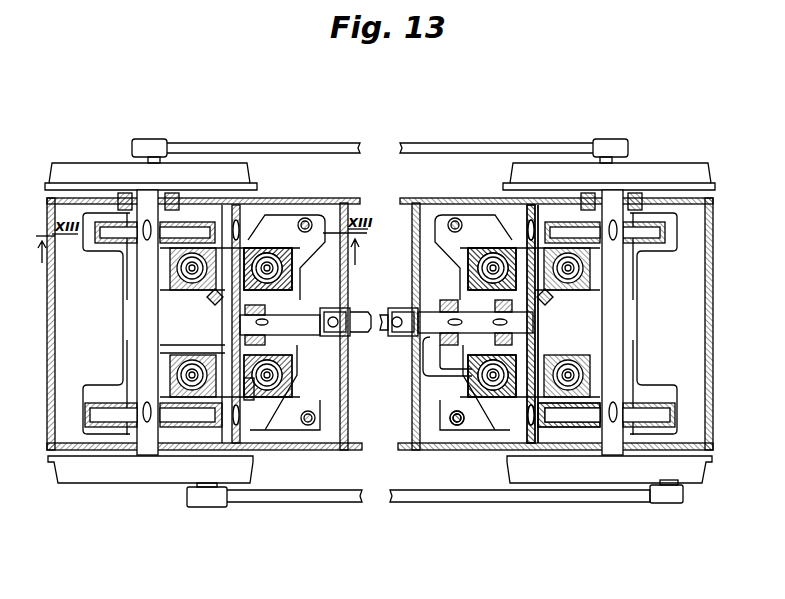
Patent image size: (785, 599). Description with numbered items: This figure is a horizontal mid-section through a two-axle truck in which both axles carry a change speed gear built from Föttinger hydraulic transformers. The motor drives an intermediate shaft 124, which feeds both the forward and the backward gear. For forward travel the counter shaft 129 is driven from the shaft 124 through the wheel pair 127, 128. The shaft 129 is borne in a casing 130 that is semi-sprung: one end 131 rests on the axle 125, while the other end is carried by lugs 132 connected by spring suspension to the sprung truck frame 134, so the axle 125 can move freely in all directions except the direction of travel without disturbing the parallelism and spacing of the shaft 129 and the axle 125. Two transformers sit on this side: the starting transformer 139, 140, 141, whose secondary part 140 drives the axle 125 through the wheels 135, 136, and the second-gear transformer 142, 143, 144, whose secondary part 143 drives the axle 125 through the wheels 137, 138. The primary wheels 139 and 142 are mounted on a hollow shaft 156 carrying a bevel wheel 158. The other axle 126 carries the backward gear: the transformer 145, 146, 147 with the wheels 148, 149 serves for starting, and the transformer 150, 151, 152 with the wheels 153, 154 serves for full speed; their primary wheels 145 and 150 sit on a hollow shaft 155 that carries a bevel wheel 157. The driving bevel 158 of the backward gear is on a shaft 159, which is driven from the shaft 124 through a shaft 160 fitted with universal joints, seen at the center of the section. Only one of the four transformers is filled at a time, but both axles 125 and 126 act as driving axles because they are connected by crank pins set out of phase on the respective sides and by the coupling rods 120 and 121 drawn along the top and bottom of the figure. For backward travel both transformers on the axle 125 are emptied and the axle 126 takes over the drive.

The coupling rod 120 is at (606, 150).
The coupling rod 121 is at (422, 497).
The intermediate shaft 124 is at (425, 335).
The axle 125 is at (612, 440).
The axle 126 is at (147, 450).
The toothed wheel 127 is at (500, 308).
The toothed wheel 128 is at (552, 303).
The counter shaft 129 is at (533, 437).
The casing 130 is at (455, 413).
The casing end 131 is at (598, 428).
The lugs 132 is at (457, 426).
The truck frame 134 is at (351, 448).
The toothed wheel 135 is at (546, 425).
The toothed wheel 136 is at (654, 412).
The toothed wheel 137 is at (546, 222).
The toothed wheel 138 is at (573, 227).
The primary wheel of forward starting transformer 139 is at (510, 380).
The secondary part of forward starting transformer 140 is at (482, 377).
The part of forward starting transformer 141 is at (478, 370).
The primary wheel of forward second-gear transformer 142 is at (472, 251).
The secondary part of forward second-gear transformer 143 is at (488, 262).
The part of forward second-gear transformer 144 is at (481, 272).
The primary wheel of backward starting transformer 145 is at (256, 382).
The part of backward starting transformer 146 is at (285, 385).
The part of backward starting transformer 147 is at (278, 372).
The toothed wheel 148 is at (222, 435).
The toothed wheel 149 is at (105, 420).
The primary wheel of backward full-speed transformer 150 is at (280, 254).
The part of backward full-speed transformer 151 is at (283, 270).
The part of backward full-speed transformer 152 is at (280, 286).
The toothed wheel 153 is at (110, 230).
The toothed wheel 154 is at (247, 222).
The hollow shaft 155 is at (224, 340).
The hollow shaft 156 is at (538, 336).
The bevel wheel 157 is at (208, 302).
The driving bevel 158 is at (262, 345).
The shaft 159 is at (305, 330).
The shaft with universal joints 160 is at (365, 320).